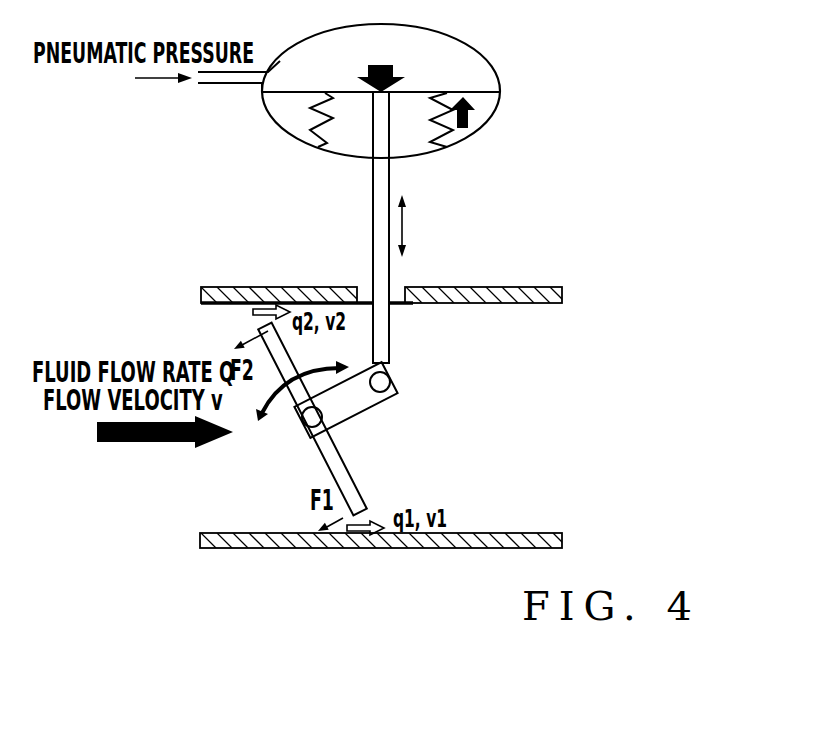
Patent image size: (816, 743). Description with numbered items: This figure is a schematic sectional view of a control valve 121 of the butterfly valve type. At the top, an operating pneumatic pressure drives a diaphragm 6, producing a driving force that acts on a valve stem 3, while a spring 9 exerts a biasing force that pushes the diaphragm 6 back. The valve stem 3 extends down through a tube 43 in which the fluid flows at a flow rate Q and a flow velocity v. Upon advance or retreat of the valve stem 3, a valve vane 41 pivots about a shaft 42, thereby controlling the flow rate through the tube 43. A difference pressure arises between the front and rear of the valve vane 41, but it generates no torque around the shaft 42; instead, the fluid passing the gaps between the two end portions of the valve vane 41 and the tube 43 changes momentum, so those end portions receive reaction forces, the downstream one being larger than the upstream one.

The diaphragm 6 is at (483, 91).
The spring 9 is at (309, 130).
The valve stem 3 is at (376, 228).
The tube 43 is at (527, 292).
The control valve 121 is at (407, 419).
The shaft 42 is at (320, 417).
The valve vane 41 is at (348, 478).